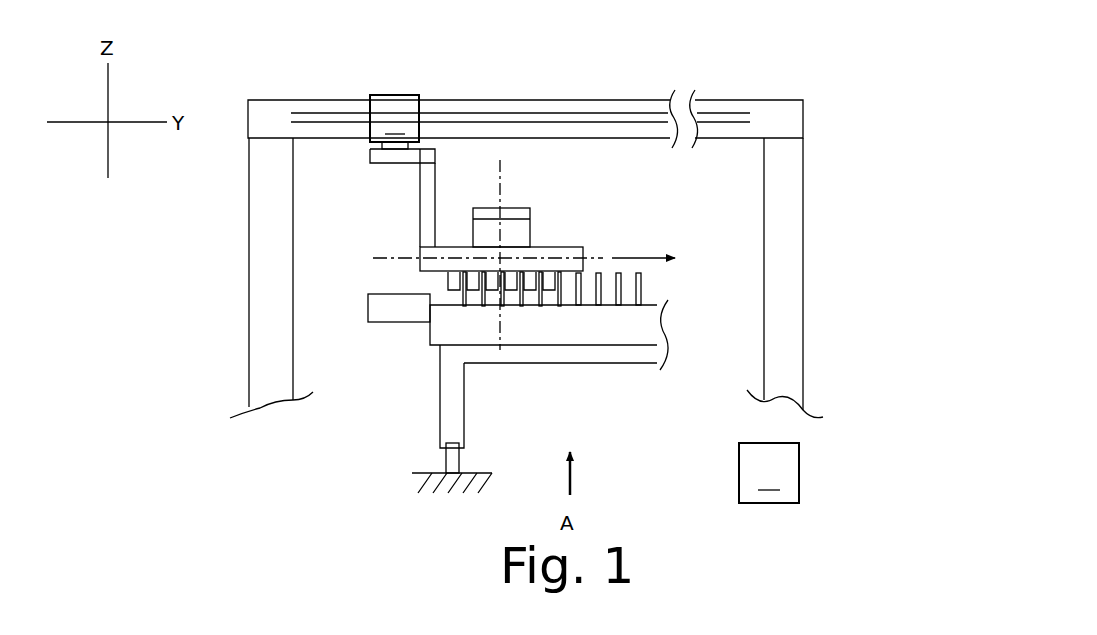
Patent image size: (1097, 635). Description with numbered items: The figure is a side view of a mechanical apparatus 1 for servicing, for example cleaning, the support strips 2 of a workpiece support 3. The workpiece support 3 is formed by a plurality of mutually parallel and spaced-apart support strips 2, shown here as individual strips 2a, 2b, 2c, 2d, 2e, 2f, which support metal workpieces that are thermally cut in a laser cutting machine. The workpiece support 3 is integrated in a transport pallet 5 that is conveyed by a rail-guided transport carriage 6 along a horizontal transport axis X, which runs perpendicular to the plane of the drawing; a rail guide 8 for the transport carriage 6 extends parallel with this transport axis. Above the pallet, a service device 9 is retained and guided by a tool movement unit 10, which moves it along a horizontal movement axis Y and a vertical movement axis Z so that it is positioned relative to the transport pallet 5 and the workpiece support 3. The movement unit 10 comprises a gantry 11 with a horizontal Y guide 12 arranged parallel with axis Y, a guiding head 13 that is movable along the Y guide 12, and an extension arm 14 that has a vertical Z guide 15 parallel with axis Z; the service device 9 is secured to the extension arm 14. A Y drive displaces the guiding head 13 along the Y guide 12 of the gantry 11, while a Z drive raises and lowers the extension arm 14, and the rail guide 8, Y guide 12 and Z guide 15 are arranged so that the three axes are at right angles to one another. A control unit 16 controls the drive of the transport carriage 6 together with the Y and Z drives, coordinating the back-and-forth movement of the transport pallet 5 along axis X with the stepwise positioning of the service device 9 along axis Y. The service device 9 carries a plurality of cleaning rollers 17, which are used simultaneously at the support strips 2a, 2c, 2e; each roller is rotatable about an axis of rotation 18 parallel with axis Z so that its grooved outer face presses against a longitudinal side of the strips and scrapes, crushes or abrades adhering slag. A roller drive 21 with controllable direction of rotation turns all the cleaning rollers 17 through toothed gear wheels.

The mechanical apparatus 1 is at (718, 80).
The support strips 2 is at (647, 282).
The support strip 2a is at (460, 306).
The support strip 2b is at (480, 306).
The support strip 2c is at (501, 308).
The support strip 2d is at (520, 308).
The support strip 2e is at (539, 308).
The support strip 2f is at (559, 308).
The workpiece support 3 is at (648, 289).
The transport pallet 5 is at (648, 326).
The transport carriage 6 is at (435, 423).
The rail guide 8 is at (450, 463).
The service device 9 is at (552, 242).
The tool movement unit 10 is at (380, 185).
The gantry 11 is at (260, 325).
The Y guide 12 is at (630, 110).
The guiding head 13 is at (394, 118).
The extension arm 14 is at (452, 188).
The Z guide 15 is at (430, 180).
The control unit 16 is at (769, 473).
The cleaning rollers 17 is at (447, 283).
The axis of rotation 18 is at (503, 197).
The roller drive 21 is at (515, 228).